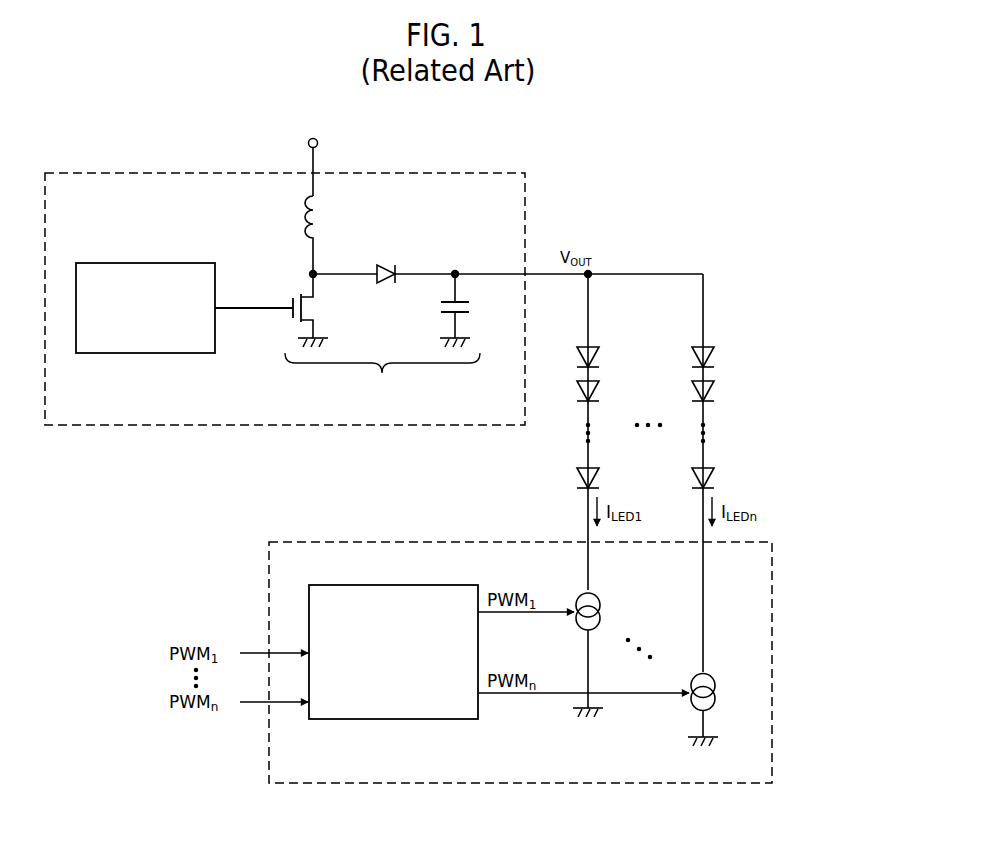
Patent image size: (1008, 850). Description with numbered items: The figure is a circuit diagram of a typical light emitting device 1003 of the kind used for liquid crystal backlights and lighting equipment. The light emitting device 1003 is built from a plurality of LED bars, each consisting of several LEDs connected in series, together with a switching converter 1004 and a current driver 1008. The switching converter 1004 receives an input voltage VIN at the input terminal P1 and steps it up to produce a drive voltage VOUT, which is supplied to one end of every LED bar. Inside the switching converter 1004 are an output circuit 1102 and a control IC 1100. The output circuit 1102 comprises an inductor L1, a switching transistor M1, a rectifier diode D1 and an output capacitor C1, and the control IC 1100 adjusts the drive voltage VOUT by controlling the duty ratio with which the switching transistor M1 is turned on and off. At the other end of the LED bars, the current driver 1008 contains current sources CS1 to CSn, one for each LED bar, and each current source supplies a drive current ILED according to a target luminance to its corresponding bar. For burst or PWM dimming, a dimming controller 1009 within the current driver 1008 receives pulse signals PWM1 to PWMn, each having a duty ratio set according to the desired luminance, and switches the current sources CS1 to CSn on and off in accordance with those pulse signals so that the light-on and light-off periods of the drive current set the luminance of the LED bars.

The switching converter 1004 is at (466, 171).
The control IC 1100 is at (157, 354).
The output circuit 1102 is at (382, 375).
The input terminal / node P1 is at (318, 143).
The inductor L1 is at (325, 208).
The rectifier diode D1 is at (387, 265).
The switching transistor M1 is at (322, 308).
The output capacitor C1 is at (435, 307).
The current driver 1008 is at (772, 722).
The dimming controller 1009 is at (405, 720).
The current source CS1 is at (603, 600).
The current source CSn is at (718, 688).
The light emitting device 1003 is at (414, 823).